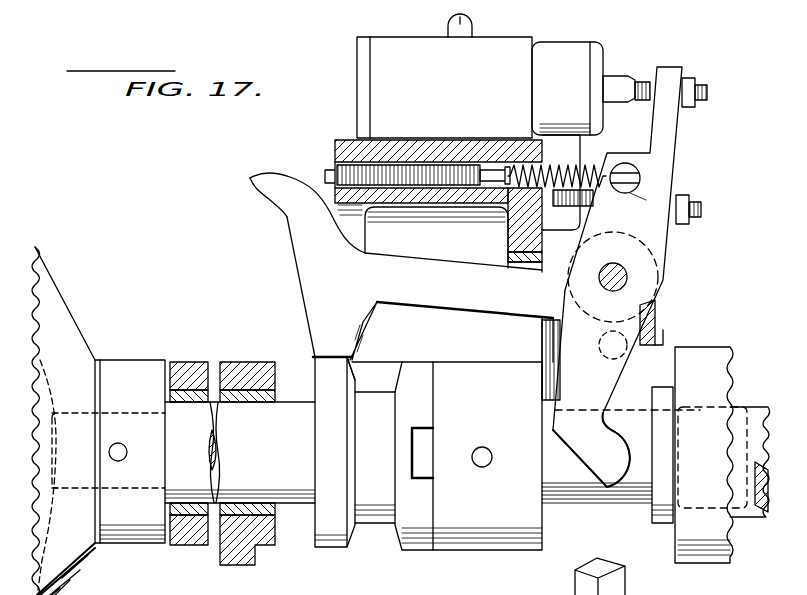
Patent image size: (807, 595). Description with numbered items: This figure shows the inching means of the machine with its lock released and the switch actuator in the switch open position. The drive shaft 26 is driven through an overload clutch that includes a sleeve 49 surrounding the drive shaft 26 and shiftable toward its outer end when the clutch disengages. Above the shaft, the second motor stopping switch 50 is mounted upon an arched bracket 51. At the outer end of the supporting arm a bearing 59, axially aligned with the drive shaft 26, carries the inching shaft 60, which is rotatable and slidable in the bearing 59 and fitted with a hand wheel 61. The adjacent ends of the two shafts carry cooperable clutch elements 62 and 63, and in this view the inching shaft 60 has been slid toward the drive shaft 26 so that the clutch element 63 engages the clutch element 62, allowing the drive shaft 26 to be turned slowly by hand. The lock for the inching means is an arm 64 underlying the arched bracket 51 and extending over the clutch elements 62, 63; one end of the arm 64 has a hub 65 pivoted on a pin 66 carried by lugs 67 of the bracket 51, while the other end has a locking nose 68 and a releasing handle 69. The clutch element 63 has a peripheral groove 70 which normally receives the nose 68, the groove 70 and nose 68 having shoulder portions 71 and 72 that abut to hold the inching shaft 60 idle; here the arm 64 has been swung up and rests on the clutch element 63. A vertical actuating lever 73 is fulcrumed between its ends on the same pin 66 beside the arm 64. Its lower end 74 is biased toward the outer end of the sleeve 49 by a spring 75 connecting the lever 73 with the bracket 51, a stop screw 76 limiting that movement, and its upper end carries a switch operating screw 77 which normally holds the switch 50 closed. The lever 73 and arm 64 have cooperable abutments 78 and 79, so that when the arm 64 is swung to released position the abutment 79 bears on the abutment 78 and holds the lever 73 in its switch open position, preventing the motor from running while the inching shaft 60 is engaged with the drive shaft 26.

The drive shaft 26 is at (752, 510).
The sleeve 49 is at (665, 518).
The second motor stopping switch 50 is at (496, 122).
The arched bracket 51 is at (338, 145).
The bearing 59 is at (240, 360).
The inching shaft 60 is at (305, 493).
The hand wheel 61 is at (66, 334).
The clutch element 62 is at (504, 526).
The clutch element 63 is at (340, 540).
The arm 64 is at (456, 298).
The hub 65 is at (655, 252).
The pin 66 is at (627, 277).
The lugs 67 is at (556, 240).
The locking nose 68 is at (330, 320).
The releasing handle 69 is at (262, 190).
The peripheral groove 70 is at (384, 500).
The shoulder portion 71 is at (356, 398).
The shoulder portion 72 is at (313, 345).
The vertical actuating lever 73 is at (665, 178).
The lower end 74 is at (611, 470).
The spring 75 is at (596, 170).
The stop screw 76 is at (565, 206).
The switch operating screw 77 is at (643, 82).
The abutment 78 is at (604, 357).
The abutment 79 is at (659, 340).